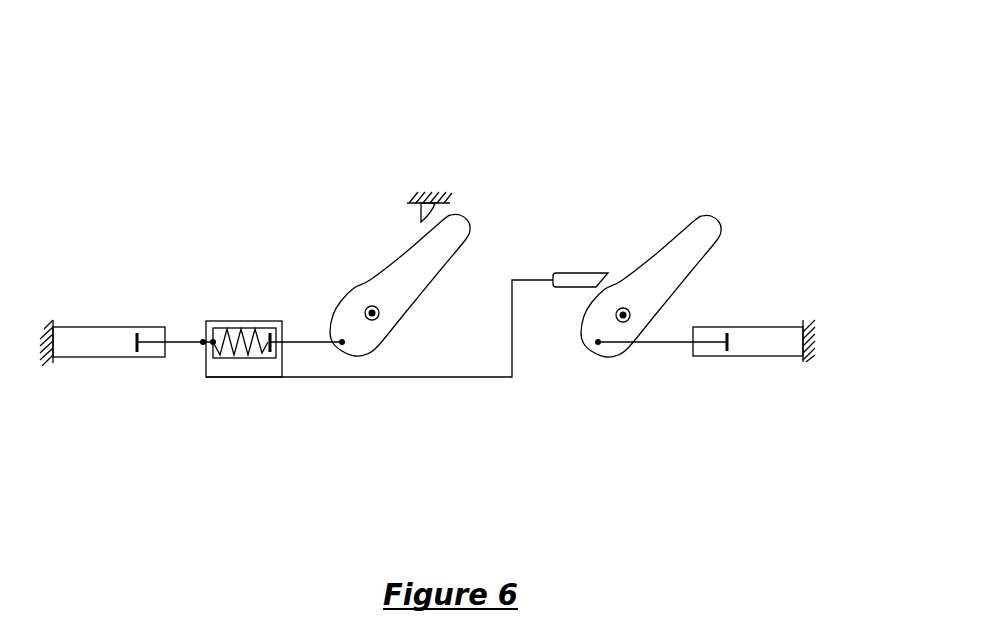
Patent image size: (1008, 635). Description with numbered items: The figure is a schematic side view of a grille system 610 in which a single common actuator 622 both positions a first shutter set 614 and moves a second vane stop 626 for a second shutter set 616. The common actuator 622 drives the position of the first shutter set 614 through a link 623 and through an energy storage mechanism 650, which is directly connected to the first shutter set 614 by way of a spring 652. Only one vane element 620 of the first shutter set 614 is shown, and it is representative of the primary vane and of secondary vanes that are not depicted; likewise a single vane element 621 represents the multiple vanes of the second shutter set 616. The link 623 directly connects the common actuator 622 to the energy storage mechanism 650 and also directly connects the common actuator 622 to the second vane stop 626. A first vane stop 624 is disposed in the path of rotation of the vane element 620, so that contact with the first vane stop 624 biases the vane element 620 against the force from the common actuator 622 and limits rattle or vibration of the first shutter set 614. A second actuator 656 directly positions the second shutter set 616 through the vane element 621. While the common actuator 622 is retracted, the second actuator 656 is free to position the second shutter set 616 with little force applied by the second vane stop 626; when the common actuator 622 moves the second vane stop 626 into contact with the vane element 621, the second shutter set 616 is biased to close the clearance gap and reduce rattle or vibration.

The grille system 610 is at (187, 100).
The first shutter set 614 is at (362, 402).
The second shutter set 616 is at (726, 290).
The vane element 620 is at (372, 284).
The vane element 621 is at (707, 227).
The common actuator 622 is at (128, 340).
The link 623 is at (177, 343).
The first vane stop 624 is at (420, 208).
The second vane stop 626 is at (596, 272).
The energy storage mechanism 650 is at (225, 265).
The spring 652 is at (250, 353).
The second actuator 656 is at (760, 350).